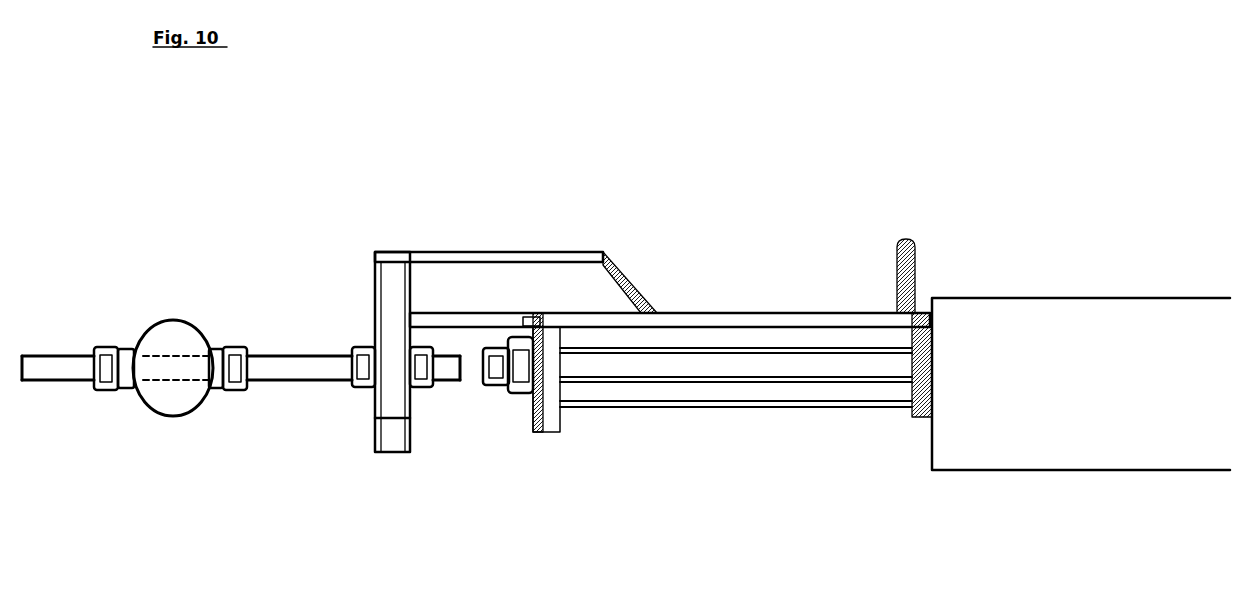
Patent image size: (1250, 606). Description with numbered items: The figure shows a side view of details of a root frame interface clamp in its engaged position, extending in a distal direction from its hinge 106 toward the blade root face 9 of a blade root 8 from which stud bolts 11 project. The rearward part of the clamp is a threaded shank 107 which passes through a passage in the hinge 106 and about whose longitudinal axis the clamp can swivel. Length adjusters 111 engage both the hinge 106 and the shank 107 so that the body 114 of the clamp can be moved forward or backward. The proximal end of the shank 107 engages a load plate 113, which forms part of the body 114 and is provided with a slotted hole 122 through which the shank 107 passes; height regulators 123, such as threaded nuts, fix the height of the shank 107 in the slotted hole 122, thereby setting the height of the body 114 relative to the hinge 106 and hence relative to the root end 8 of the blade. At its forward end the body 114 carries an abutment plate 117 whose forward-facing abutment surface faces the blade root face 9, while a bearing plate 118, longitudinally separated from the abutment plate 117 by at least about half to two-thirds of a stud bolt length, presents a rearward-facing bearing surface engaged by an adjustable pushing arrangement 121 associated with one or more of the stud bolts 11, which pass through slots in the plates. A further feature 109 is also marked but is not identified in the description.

The blade root 8 is at (1208, 322).
The blade root face 9 is at (931, 447).
The stud bolts 11 is at (797, 363).
The hinge 106 is at (178, 337).
The shank 107 is at (292, 381).
The pin 109 is at (905, 245).
The length adjusters 111 is at (215, 389).
The load plate 113 is at (392, 453).
The body portion 114 is at (825, 338).
The abutment plate 117 is at (923, 315).
The bearing plate 118 is at (548, 410).
The adjustable pushing arrangement 121 is at (521, 366).
The slotted hole 122 is at (420, 408).
The height regulators 123 is at (420, 362).